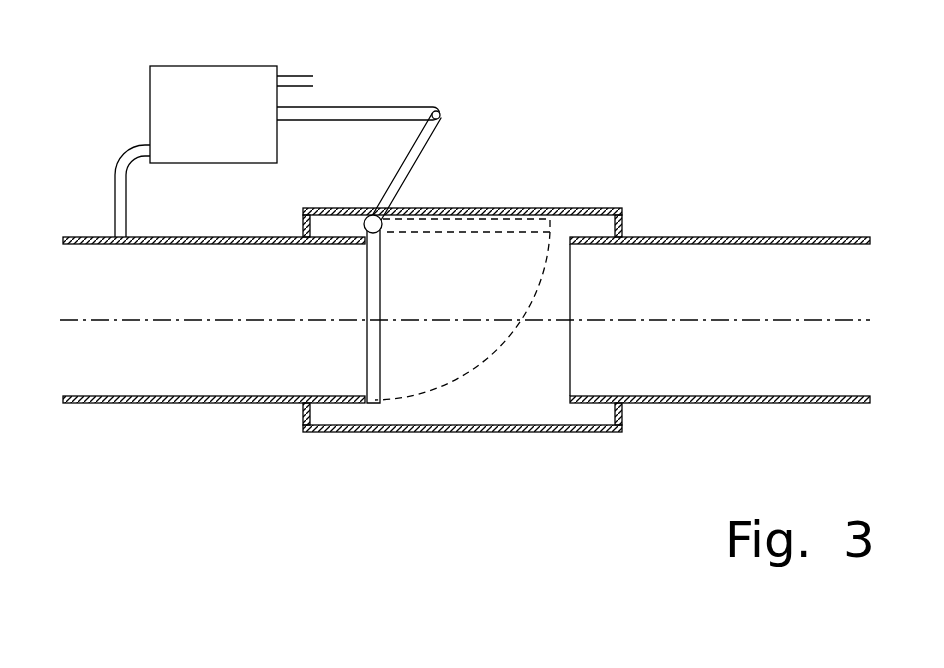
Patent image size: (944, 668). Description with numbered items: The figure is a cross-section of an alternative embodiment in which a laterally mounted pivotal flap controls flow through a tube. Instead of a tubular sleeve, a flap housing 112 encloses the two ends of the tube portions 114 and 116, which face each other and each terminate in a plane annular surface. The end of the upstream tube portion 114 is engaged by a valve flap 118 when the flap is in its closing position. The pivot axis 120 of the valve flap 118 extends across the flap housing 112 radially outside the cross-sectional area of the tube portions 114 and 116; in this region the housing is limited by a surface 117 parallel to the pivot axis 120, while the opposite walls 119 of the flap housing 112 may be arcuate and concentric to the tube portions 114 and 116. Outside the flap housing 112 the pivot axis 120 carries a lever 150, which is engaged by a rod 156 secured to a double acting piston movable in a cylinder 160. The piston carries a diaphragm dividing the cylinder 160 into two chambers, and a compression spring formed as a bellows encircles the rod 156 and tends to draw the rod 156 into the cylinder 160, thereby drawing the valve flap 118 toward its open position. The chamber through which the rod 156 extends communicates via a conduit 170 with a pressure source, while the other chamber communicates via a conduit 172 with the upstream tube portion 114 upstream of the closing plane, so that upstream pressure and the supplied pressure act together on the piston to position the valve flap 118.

The flap housing 112 is at (599, 198).
The upstream tube portion 114 is at (135, 405).
The tube portion 116 is at (742, 237).
The surface 117 is at (450, 208).
The valve flap 118 is at (373, 380).
The opposite walls 119 is at (473, 433).
The pivot axis 120 is at (383, 232).
The lever 150 is at (390, 180).
The rod 156 is at (347, 107).
The cylinder 160 is at (175, 163).
The conduit 170 is at (293, 75).
The conduit 172 is at (122, 153).